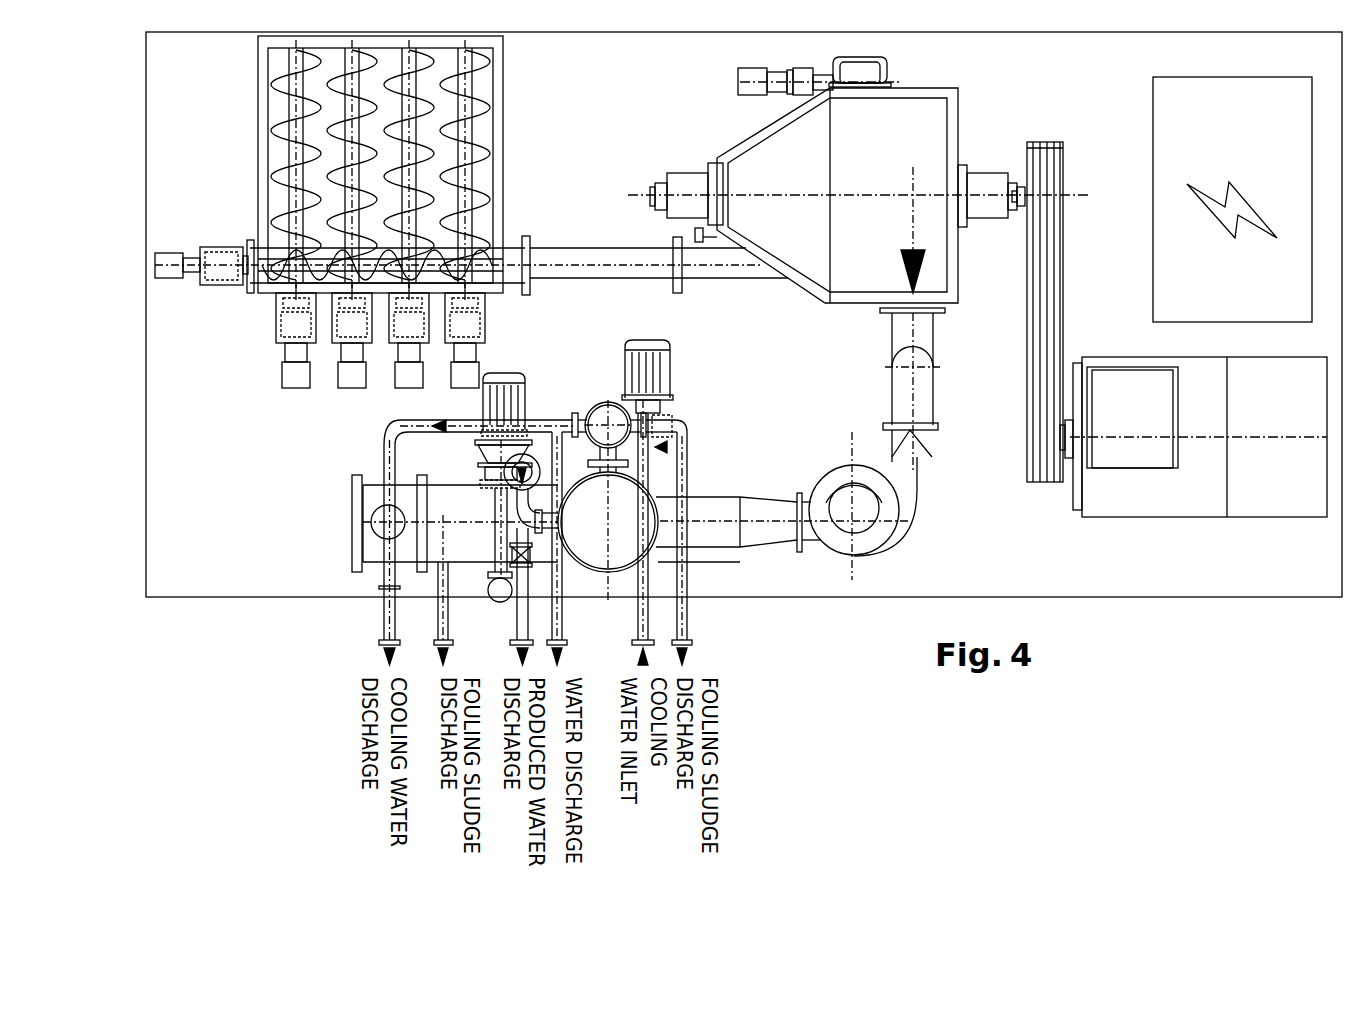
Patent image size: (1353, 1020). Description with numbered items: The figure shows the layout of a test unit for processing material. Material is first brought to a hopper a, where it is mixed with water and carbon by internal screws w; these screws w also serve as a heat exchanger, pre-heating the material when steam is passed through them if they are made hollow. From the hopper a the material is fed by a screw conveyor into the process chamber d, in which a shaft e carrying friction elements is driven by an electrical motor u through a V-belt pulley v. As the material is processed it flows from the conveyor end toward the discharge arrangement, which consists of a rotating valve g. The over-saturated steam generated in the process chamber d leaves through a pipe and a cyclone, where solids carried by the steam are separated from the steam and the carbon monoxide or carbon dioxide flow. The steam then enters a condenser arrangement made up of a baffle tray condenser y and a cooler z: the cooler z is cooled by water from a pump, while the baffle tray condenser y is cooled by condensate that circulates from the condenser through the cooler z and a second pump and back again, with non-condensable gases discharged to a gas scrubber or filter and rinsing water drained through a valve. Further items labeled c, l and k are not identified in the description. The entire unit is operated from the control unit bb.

The hopper a is at (504, 92).
The internal screws w is at (482, 163).
The drive motor c is at (163, 280).
The rotating valve g is at (878, 60).
The process chamber d is at (837, 200).
The bearings l is at (678, 173).
The shaft e is at (1023, 203).
The V-belt pulley v is at (1052, 140).
The control-unit bb is at (1232, 199).
The electrical motor u is at (1193, 437).
The cyclone k is at (880, 553).
The cooler z is at (546, 523).
The baffle tray condenser y is at (608, 522).